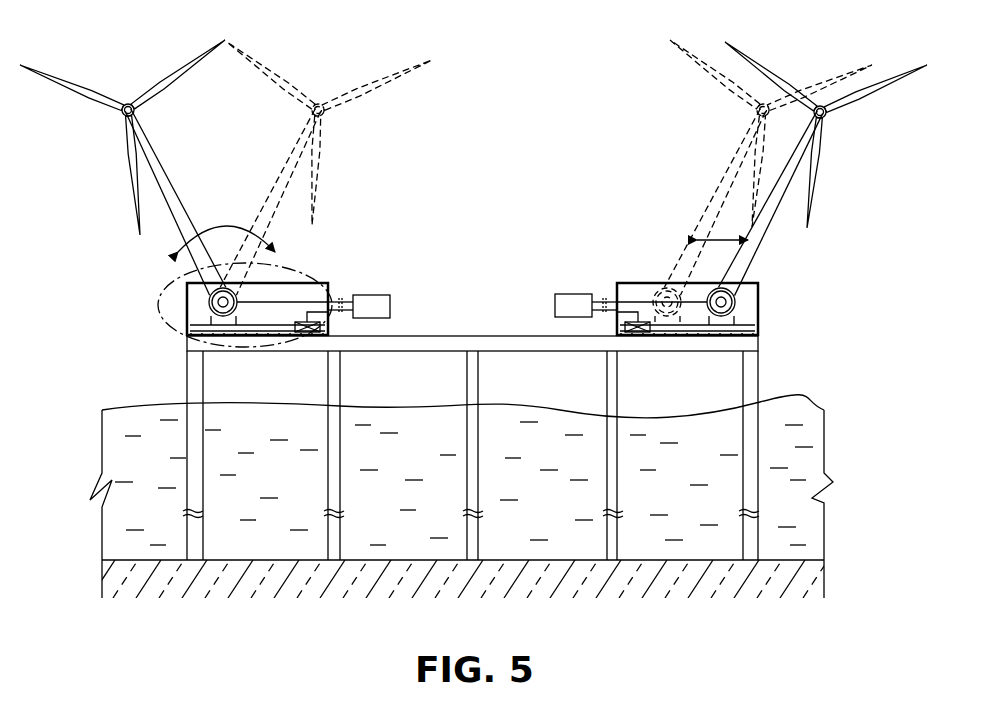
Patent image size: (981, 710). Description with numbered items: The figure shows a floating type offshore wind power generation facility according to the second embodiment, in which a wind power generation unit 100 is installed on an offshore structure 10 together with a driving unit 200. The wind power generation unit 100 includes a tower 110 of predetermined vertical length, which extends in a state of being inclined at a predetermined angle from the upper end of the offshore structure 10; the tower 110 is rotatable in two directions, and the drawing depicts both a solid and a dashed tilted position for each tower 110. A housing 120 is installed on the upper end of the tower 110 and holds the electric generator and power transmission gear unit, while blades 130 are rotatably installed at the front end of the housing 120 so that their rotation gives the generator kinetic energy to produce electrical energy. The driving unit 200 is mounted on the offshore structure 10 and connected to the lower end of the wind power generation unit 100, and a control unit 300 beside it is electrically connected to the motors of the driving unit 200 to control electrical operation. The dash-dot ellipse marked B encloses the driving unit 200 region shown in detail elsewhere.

The offshore structure 10 is at (468, 336).
The wind power generation unit 100 is at (123, 152).
The tower 110 is at (167, 183).
The housing 120 is at (127, 103).
The blades 130 is at (64, 82).
The driving unit 200 is at (330, 283).
The control unit 300 is at (382, 305).
The detail region B is at (158, 292).